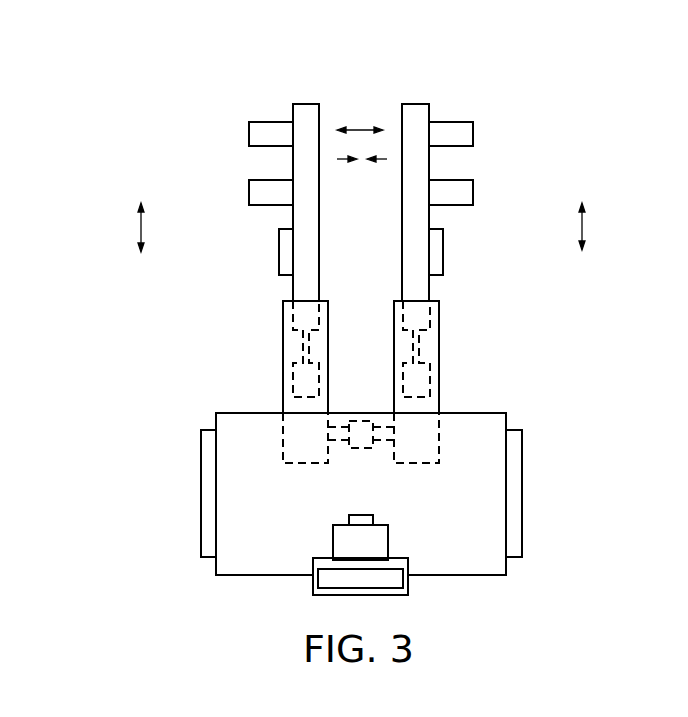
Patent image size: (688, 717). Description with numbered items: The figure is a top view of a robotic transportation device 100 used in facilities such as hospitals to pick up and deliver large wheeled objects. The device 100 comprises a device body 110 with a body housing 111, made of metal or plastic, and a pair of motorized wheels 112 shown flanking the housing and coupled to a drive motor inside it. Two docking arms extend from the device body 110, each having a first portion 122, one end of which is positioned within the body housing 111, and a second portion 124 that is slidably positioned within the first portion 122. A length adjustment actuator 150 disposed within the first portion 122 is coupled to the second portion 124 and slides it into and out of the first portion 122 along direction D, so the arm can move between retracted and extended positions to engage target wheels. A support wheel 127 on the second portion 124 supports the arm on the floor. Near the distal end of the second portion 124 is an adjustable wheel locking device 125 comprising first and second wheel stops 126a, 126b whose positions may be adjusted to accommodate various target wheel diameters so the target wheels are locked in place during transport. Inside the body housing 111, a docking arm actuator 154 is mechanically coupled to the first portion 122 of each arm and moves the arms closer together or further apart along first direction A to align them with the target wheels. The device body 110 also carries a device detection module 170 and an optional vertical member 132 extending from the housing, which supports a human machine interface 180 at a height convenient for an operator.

The robotic transportation device 100 is at (341, 319).
The device body 110 is at (347, 480).
The body housing 111 is at (506, 420).
The motorized wheels 112 is at (201, 497).
The first portion 122 is at (283, 335).
The second portion 124 is at (292, 293).
The adjustable wheel locking device 125 is at (363, 244).
The first wheel stop 126a is at (249, 131).
The second wheel stop 126b is at (249, 190).
The support wheel 127 is at (279, 252).
The vertical member 132 is at (388, 545).
The length adjustment actuator 150 is at (297, 385).
The docking arm actuator 154 is at (362, 448).
The device detection module 170 is at (349, 520).
The human machine interface 180 is at (408, 590).
The first direction A is at (381, 103).
The direction D is at (140, 228).